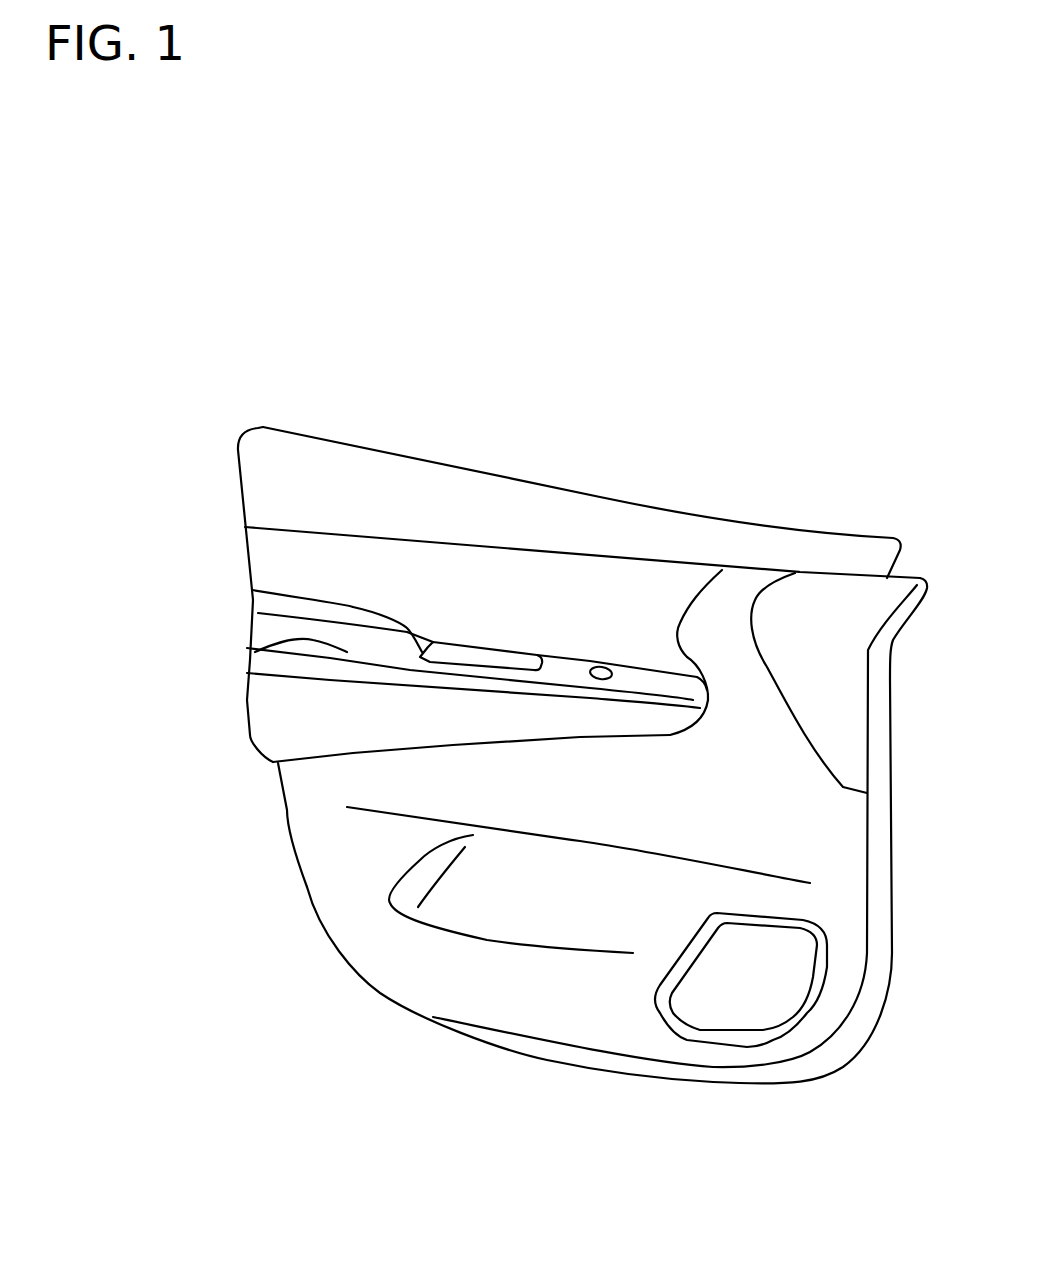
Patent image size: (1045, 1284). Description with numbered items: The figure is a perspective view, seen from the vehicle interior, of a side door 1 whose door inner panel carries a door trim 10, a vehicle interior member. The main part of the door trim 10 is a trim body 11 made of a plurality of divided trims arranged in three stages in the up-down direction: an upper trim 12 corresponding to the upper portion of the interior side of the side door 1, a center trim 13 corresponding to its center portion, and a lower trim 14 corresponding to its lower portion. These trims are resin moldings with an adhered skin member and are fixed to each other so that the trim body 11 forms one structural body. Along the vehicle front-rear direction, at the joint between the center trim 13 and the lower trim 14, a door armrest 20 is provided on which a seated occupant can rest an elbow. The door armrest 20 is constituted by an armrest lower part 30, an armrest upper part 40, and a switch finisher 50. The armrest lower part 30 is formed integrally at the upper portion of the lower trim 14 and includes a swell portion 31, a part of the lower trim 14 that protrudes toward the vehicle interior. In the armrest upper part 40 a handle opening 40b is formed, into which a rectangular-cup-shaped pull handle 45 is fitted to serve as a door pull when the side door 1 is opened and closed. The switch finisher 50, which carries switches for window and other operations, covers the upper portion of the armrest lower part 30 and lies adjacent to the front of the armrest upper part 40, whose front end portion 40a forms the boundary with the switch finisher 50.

The side door 1 is at (846, 405).
The door trim 10 is at (287, 402).
The trim body 11 is at (414, 970).
The upper trim 12 is at (365, 480).
The center trim 13 is at (435, 587).
The lower trim 14 is at (573, 918).
The door armrest 20 is at (237, 764).
The armrest lower part 30 is at (450, 876).
The swell portion 31 is at (360, 742).
The armrest upper part 40 is at (247, 660).
The front end portion 40a is at (538, 690).
The handle opening 40b is at (255, 593).
The pull handle 45 is at (478, 655).
The switch finisher 50 is at (628, 677).